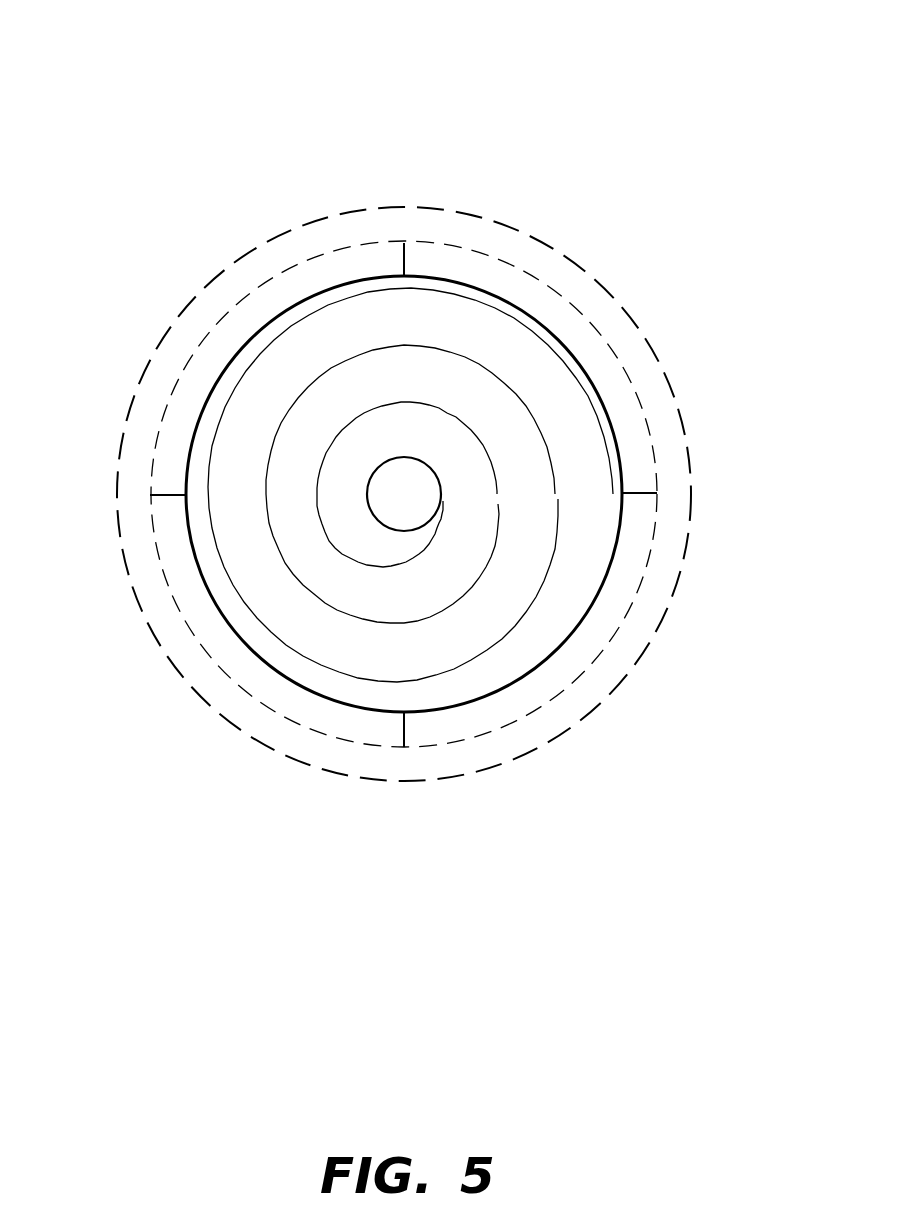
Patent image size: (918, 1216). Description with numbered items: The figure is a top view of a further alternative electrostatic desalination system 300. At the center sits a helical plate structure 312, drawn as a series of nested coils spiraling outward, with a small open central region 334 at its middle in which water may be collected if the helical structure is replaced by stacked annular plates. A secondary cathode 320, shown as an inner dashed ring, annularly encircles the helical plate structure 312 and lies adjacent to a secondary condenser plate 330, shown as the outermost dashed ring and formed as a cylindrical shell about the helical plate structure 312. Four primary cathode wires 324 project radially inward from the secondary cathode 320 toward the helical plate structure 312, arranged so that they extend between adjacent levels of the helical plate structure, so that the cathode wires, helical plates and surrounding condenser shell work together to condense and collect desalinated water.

The system 300 is at (705, 70).
The helical plate structure 312 is at (495, 668).
The secondary cathode 320 is at (610, 345).
The primary cathode wires 324 is at (404, 250).
The secondary condenser plate 330 is at (560, 262).
The central region 334 is at (396, 484).